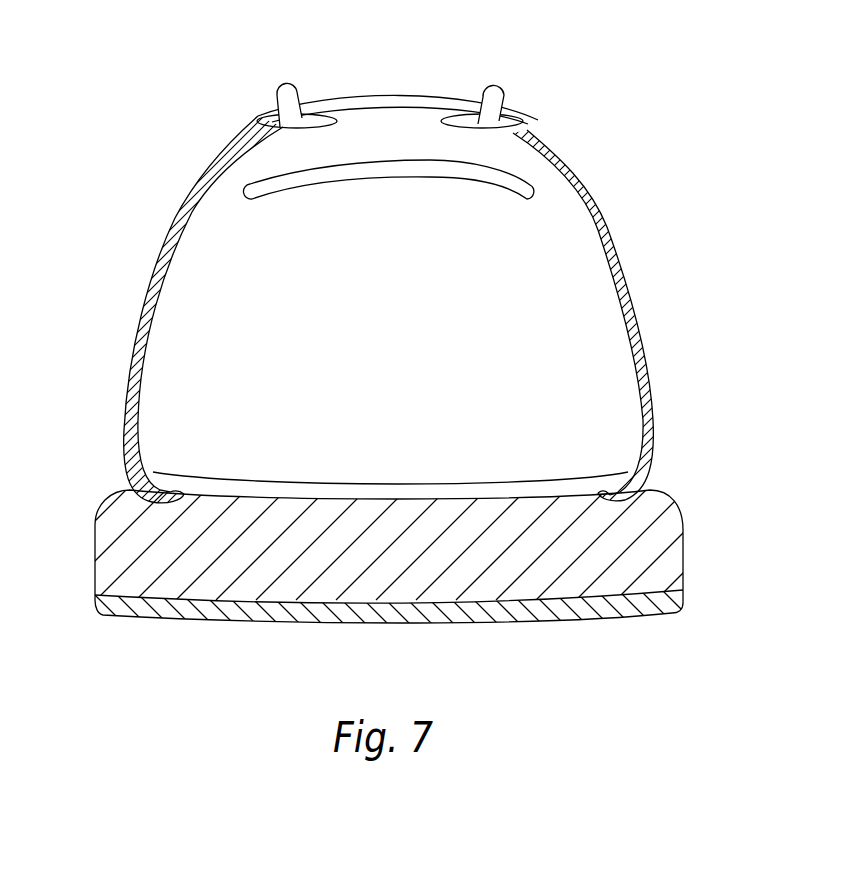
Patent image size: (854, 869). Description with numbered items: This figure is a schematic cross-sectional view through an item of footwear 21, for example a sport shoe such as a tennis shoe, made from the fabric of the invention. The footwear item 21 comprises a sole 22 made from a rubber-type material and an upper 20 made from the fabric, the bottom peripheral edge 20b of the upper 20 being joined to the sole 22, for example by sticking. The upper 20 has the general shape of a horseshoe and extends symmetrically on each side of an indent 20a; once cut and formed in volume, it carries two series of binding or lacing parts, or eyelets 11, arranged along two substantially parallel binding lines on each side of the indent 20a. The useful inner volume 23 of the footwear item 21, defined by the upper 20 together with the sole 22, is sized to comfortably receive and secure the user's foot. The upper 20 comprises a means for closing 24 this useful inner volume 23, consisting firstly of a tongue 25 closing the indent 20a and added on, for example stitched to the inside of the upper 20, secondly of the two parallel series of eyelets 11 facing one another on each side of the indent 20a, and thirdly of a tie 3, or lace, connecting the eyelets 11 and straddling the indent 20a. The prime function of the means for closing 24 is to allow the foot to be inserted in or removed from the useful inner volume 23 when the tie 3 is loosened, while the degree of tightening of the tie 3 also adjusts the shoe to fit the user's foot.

The tie 3 is at (368, 108).
The eyelets 11 is at (283, 96).
The upper 20 is at (447, 269).
The indent 20a is at (343, 120).
The bottom peripheral edge 20b is at (153, 492).
The item of footwear 21 is at (203, 141).
The sole 22 is at (637, 558).
The useful inner volume 23 is at (562, 332).
The means for closing 24 is at (393, 73).
The tongue 25 is at (265, 192).